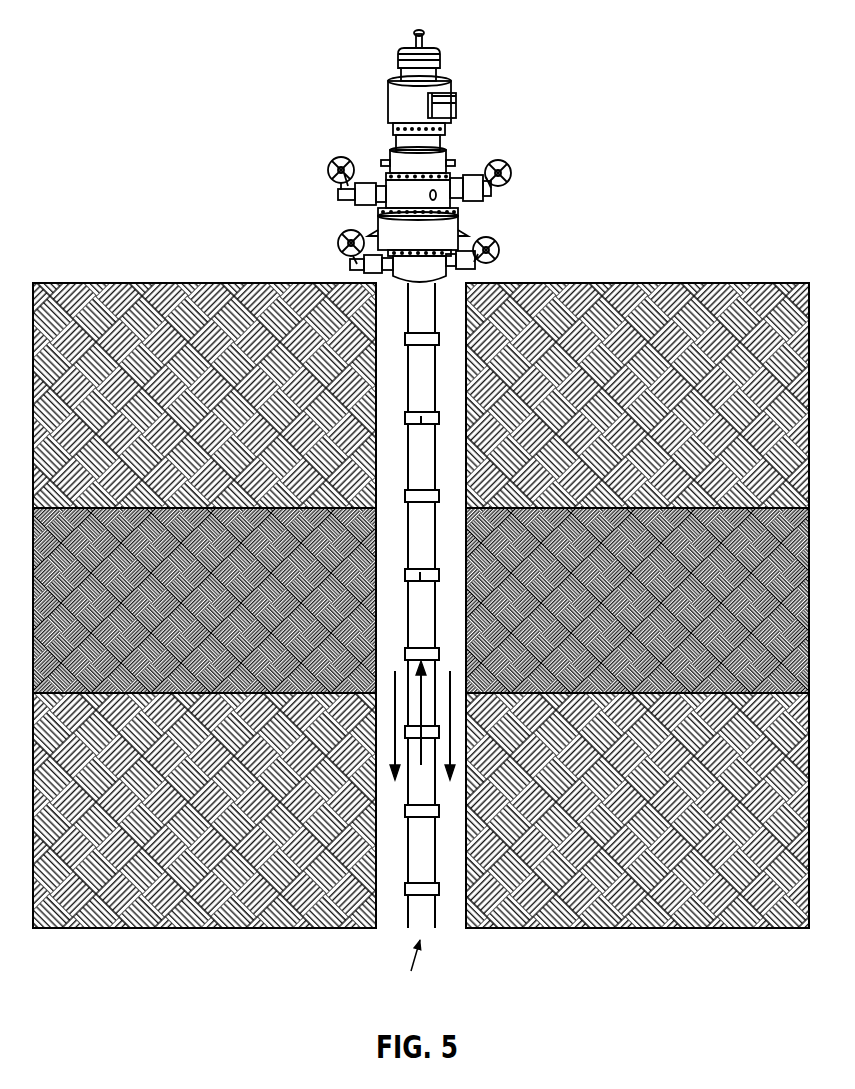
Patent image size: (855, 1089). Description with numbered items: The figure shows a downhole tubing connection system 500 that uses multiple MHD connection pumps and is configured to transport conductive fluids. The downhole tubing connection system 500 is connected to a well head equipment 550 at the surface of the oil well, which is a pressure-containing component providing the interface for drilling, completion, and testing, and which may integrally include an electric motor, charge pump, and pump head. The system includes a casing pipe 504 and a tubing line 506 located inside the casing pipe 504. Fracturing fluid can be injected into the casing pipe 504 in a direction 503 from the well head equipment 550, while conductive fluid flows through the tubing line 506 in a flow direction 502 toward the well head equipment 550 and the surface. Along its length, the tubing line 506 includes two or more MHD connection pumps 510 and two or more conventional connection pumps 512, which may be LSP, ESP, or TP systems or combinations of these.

The downhole tubing connection system 500 is at (392, 838).
The flow direction 502 is at (408, 702).
The direction 503 is at (430, 725).
The casing pipe 504 is at (368, 353).
The tubing line 506 is at (402, 973).
The MHD connection pump 510 is at (428, 331).
The conventional connection pump 512 is at (412, 568).
The well head equipment 550 is at (360, 52).